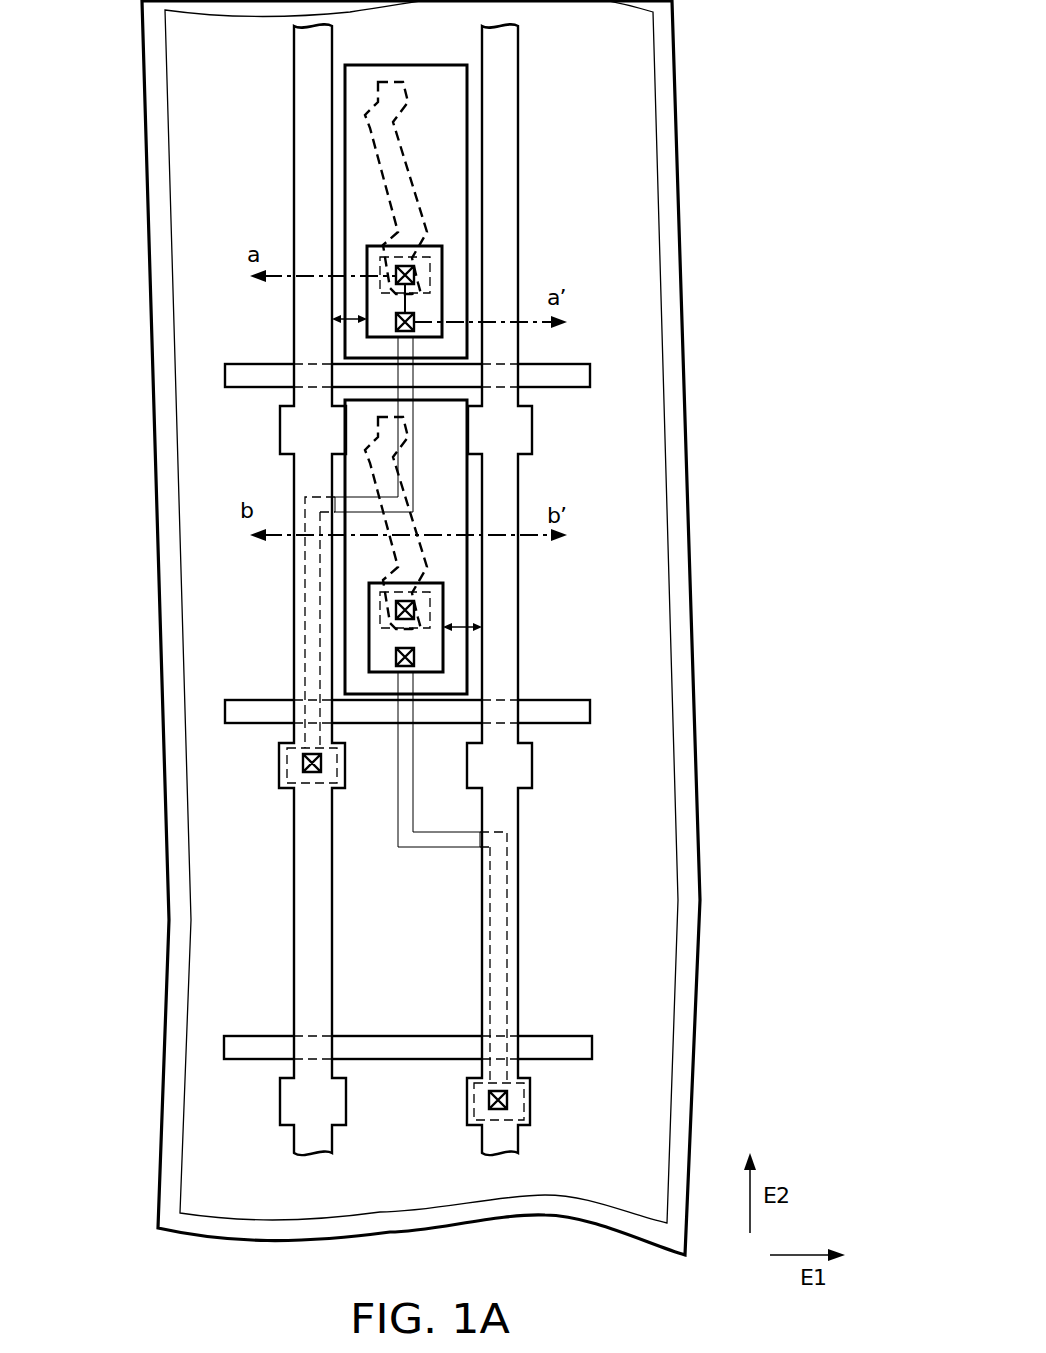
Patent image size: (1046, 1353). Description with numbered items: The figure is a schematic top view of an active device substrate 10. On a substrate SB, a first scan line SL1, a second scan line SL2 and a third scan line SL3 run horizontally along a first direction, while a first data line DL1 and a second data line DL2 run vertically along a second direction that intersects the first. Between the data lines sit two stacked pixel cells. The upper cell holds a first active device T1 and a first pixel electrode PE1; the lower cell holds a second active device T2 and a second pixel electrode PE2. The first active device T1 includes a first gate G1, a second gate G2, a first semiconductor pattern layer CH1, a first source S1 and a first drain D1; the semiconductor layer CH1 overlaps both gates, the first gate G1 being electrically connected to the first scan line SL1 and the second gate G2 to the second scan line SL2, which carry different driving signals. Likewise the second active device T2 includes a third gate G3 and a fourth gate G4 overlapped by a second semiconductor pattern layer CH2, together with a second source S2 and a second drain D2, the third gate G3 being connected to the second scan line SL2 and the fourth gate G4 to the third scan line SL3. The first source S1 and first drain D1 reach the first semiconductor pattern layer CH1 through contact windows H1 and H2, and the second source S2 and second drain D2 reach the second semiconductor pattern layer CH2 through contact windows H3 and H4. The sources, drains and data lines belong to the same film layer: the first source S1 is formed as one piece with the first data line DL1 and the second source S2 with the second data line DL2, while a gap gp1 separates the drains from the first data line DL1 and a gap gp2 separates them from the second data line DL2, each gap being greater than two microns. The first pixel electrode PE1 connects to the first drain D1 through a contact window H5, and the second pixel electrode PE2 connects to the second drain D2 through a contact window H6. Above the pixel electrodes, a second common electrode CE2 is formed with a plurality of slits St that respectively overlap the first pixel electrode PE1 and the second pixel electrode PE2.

The active device substrate 10 is at (567, 1277).
The second common electrode CE2 is at (144, 101).
The substrate SB is at (622, 209).
The first data line DL1 is at (305, 157).
The second data line DL2 is at (505, 157).
The first scan line SL1 is at (585, 388).
The second scan line SL2 is at (573, 723).
The third scan line SL3 is at (568, 1043).
The first pixel electrode PE1 is at (345, 196).
The second pixel electrode PE2 is at (345, 553).
The slits St is at (372, 108).
The first active device T1 is at (818, 25).
The second active device T2 is at (818, 248).
The first gate G1 is at (407, 373).
The second gate G2 is at (300, 697).
The third gate G3 is at (397, 702).
The fourth gate G4 is at (497, 1047).
The first semiconductor pattern layer CH1 is at (413, 375).
The second semiconductor pattern layer CH2 is at (445, 838).
The first source S1 is at (279, 750).
The second source S2 is at (530, 1102).
The first drain D1 is at (437, 285).
The second drain D2 is at (437, 604).
The contact window H1 is at (305, 770).
The contact window H2 is at (414, 277).
The contact window H3 is at (505, 1097).
The contact window H4 is at (412, 606).
The contact window H5 is at (414, 325).
The contact window H6 is at (414, 656).
The gap gp1 is at (350, 316).
The gap gp2 is at (460, 625).